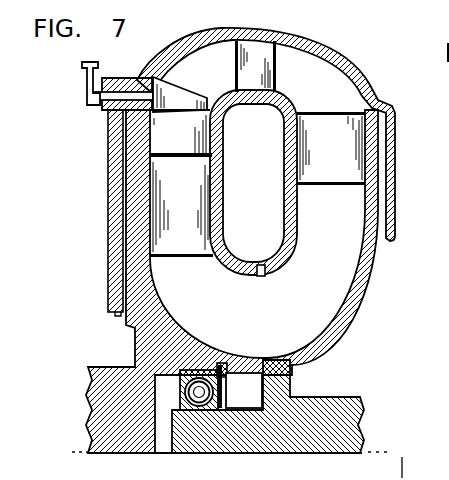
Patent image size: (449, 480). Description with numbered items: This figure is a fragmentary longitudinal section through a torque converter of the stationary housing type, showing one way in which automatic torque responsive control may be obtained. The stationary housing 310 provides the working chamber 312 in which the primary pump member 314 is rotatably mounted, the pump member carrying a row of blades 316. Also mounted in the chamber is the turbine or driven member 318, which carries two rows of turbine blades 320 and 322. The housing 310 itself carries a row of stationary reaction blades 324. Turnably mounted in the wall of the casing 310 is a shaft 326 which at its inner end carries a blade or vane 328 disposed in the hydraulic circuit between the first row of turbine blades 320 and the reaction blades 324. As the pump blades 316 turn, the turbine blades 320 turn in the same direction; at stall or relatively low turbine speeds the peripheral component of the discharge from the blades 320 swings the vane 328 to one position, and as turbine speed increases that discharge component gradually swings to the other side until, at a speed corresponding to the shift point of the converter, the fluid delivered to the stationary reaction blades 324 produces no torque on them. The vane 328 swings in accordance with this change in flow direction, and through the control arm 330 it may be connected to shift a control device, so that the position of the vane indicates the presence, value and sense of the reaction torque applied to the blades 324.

The stationary housing 310 is at (397, 124).
The working chamber 312 is at (281, 316).
The primary pump member 314 is at (124, 319).
The blades 316 is at (194, 213).
The turbine or driven member 318 is at (293, 375).
The turbine blades 320 is at (191, 142).
The turbine blades 322 is at (348, 149).
The stationary reaction blades 324 is at (270, 71).
The shaft 326 is at (120, 97).
The blade or vane 328 is at (168, 82).
The control arm 330 is at (85, 90).